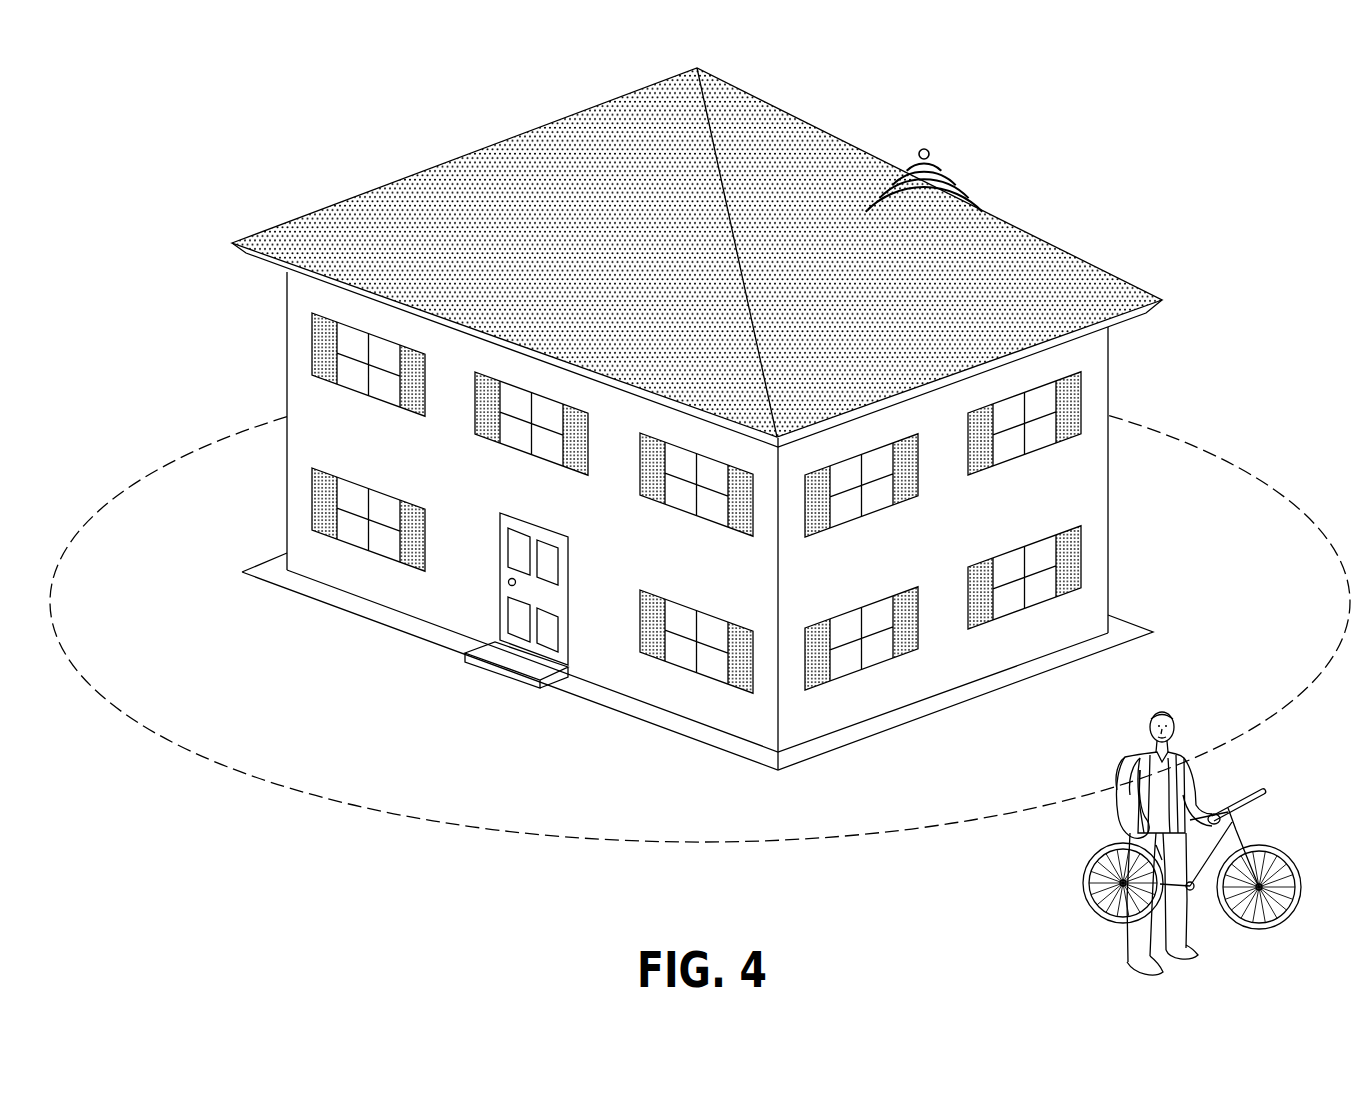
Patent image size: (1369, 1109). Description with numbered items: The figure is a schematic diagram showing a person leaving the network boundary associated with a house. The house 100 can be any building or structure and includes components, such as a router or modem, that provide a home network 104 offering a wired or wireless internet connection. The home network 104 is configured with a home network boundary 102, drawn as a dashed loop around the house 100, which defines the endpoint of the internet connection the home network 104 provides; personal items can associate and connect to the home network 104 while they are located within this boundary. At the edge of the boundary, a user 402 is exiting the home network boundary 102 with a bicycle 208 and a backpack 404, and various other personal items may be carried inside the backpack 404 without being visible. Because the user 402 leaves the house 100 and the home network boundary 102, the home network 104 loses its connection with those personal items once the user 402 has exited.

The house 100 is at (527, 163).
The home network boundary 102 is at (1203, 448).
The home network 104 is at (981, 96).
The bicycle 208 is at (1272, 847).
The user 402 is at (1166, 711).
The backpack 404 is at (1117, 757).